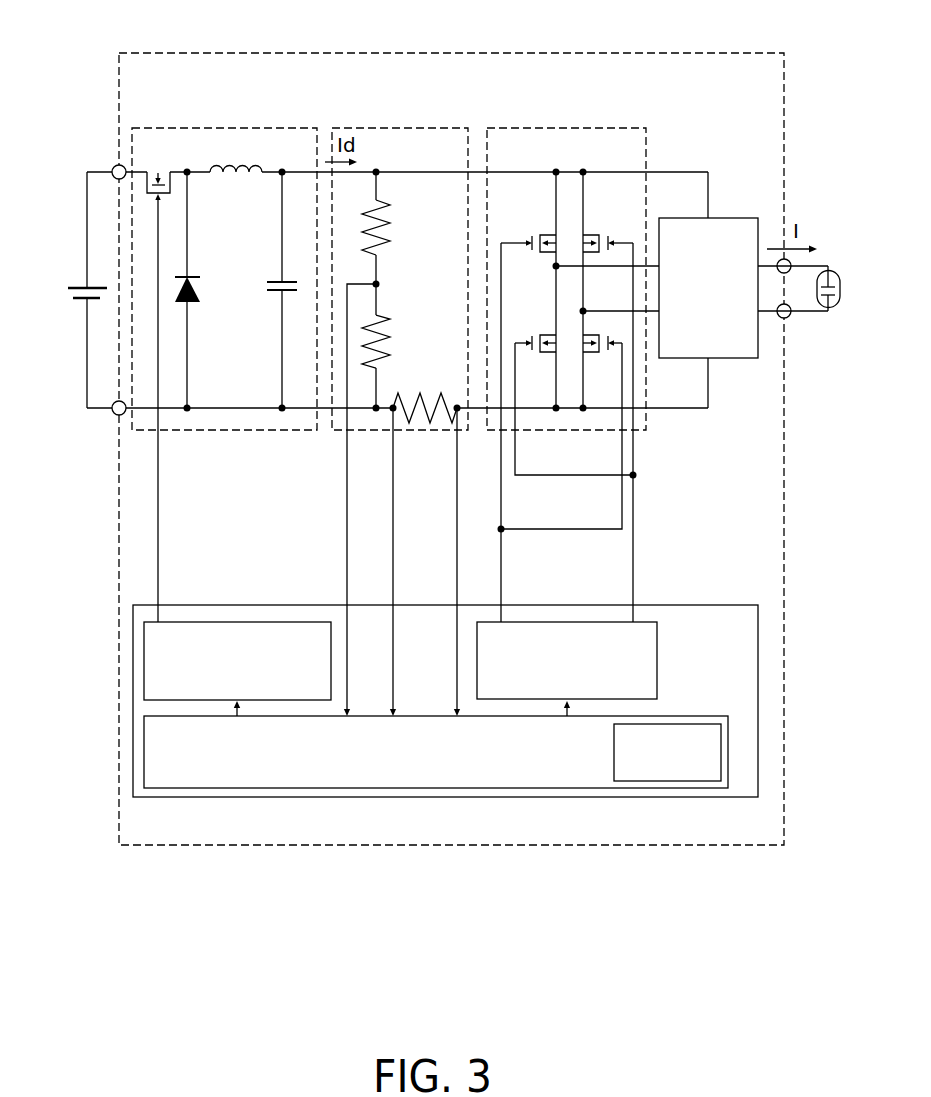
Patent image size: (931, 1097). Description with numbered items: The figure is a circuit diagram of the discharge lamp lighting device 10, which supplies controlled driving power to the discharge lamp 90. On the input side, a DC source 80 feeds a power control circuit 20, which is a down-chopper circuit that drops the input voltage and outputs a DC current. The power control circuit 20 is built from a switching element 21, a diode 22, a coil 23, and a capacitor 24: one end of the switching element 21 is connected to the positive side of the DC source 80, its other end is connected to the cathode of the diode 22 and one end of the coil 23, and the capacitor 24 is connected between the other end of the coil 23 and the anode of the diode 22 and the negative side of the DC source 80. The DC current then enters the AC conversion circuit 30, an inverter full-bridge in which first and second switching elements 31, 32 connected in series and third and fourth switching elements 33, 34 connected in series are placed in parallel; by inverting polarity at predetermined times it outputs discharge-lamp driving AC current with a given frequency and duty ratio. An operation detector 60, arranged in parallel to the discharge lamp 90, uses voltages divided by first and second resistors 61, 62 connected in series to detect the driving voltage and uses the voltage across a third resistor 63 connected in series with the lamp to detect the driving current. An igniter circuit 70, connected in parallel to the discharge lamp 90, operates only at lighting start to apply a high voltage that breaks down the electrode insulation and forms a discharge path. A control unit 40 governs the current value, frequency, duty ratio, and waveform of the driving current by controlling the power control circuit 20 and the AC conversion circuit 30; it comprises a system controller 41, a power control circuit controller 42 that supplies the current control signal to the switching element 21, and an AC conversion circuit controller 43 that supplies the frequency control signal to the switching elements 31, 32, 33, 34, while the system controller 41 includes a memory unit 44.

The discharge lamp lighting device 10 is at (628, 53).
The power control circuit 20 is at (253, 128).
The switching element 21 is at (159, 382).
The diode 22 is at (199, 290).
The coil 23 is at (250, 156).
The capacitor 24 is at (290, 290).
The AC conversion circuit 30 is at (577, 128).
The first switching element 31 is at (528, 232).
The second switching element 32 is at (534, 332).
The third switching element 33 is at (608, 232).
The fourth switching element 34 is at (602, 332).
The control unit 40 is at (520, 605).
The system controller 41 is at (712, 716).
The power control circuit controller 42 is at (255, 622).
The AC conversion circuit controller 43 is at (642, 622).
The memory unit 44 is at (722, 729).
The operation detector 60 is at (433, 128).
The first resistor 61 is at (393, 228).
The second resistor 62 is at (393, 346).
The third resistor 63 is at (425, 396).
The igniter circuit 70 is at (748, 218).
The DC source 80 is at (82, 286).
The discharge lamp 90 is at (836, 268).